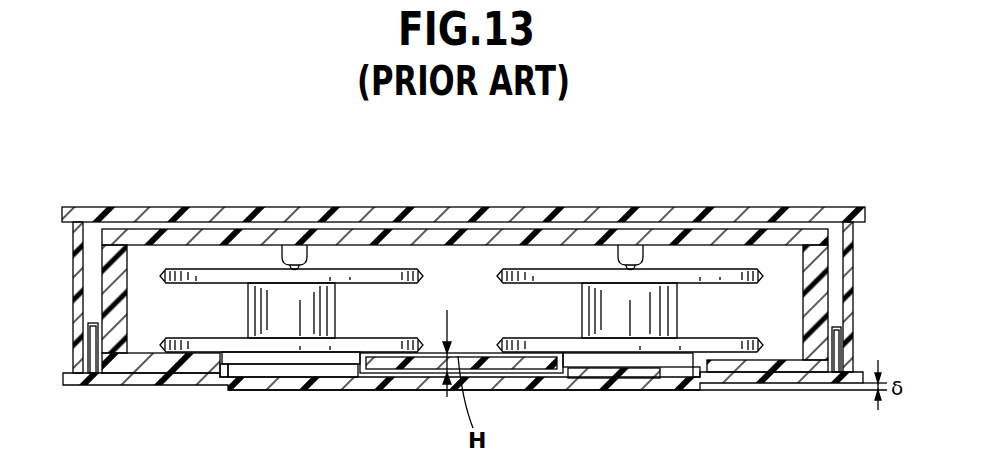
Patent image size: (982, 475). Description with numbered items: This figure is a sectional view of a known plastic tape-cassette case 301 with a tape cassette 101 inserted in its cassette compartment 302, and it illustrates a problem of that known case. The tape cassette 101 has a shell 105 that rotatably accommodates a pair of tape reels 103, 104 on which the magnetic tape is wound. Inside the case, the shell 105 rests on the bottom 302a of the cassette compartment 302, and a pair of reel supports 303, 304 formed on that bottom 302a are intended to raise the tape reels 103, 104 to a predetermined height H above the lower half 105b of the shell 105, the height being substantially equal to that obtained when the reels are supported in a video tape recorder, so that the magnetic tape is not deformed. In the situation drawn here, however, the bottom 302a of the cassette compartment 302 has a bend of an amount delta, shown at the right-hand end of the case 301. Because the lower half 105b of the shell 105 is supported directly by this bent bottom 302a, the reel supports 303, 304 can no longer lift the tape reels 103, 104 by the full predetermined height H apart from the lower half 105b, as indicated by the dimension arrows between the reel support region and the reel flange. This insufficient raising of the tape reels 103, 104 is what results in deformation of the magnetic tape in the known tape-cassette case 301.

The tape cassette 101 is at (158, 222).
The tape reel 103 is at (236, 310).
The tape reel 104 is at (570, 311).
The shell 105 is at (90, 315).
The lower half of the shell 105b is at (128, 363).
The tape-cassette case 301 is at (228, 200).
The cassette compartment 302 is at (320, 227).
The bottom of the cassette compartment 302a is at (172, 387).
The reel support 303 is at (228, 370).
The reel support 304 is at (680, 370).